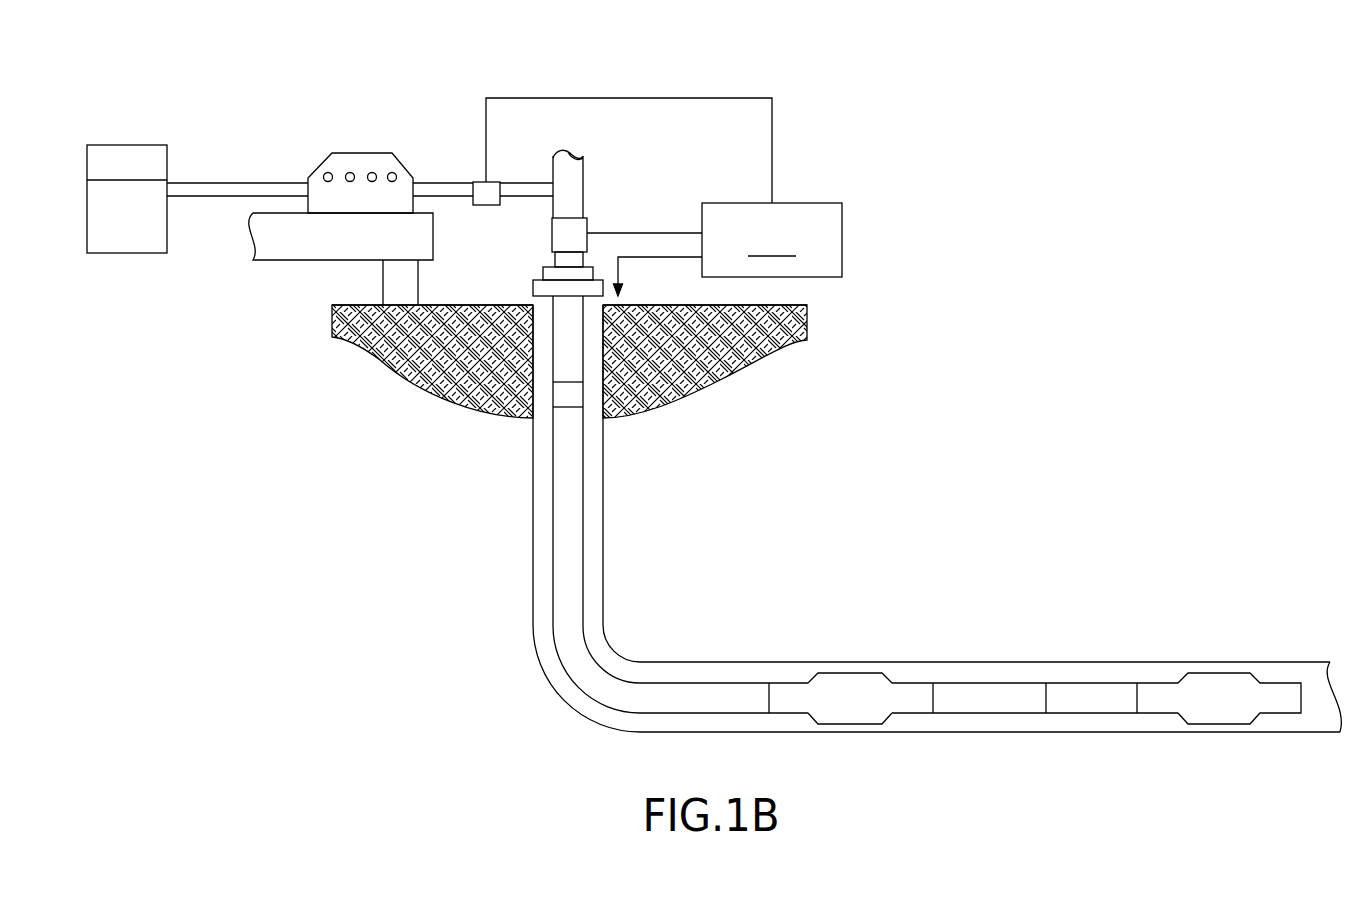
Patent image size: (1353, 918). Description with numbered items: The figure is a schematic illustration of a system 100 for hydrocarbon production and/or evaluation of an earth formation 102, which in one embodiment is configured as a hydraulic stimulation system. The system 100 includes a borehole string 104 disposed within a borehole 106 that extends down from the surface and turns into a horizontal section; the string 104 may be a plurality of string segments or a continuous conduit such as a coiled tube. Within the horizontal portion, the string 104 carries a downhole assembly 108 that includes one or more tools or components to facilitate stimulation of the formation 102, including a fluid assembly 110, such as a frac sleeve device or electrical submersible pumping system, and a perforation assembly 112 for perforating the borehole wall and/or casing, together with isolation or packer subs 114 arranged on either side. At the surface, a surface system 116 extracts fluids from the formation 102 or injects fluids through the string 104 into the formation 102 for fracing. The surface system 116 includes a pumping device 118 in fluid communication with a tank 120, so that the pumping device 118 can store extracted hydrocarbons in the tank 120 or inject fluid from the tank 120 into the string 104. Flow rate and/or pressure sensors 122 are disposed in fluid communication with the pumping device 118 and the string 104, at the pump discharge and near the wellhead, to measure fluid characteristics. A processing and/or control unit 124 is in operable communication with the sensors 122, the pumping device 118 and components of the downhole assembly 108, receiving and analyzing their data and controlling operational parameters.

The system 100 is at (1055, 265).
The earth formation 102 is at (450, 397).
The borehole string 104 is at (567, 549).
The borehole 106 is at (548, 628).
The downhole assembly 108 is at (1130, 628).
The fluid assembly 110 is at (957, 700).
The perforation assembly 112 is at (1072, 695).
The packer sub 114 is at (842, 693).
The surface system 116 is at (305, 108).
The pumping device 118 is at (377, 163).
The tank 120 is at (123, 233).
The sensor 122 is at (566, 228).
The processing and/or control unit 124 is at (772, 240).